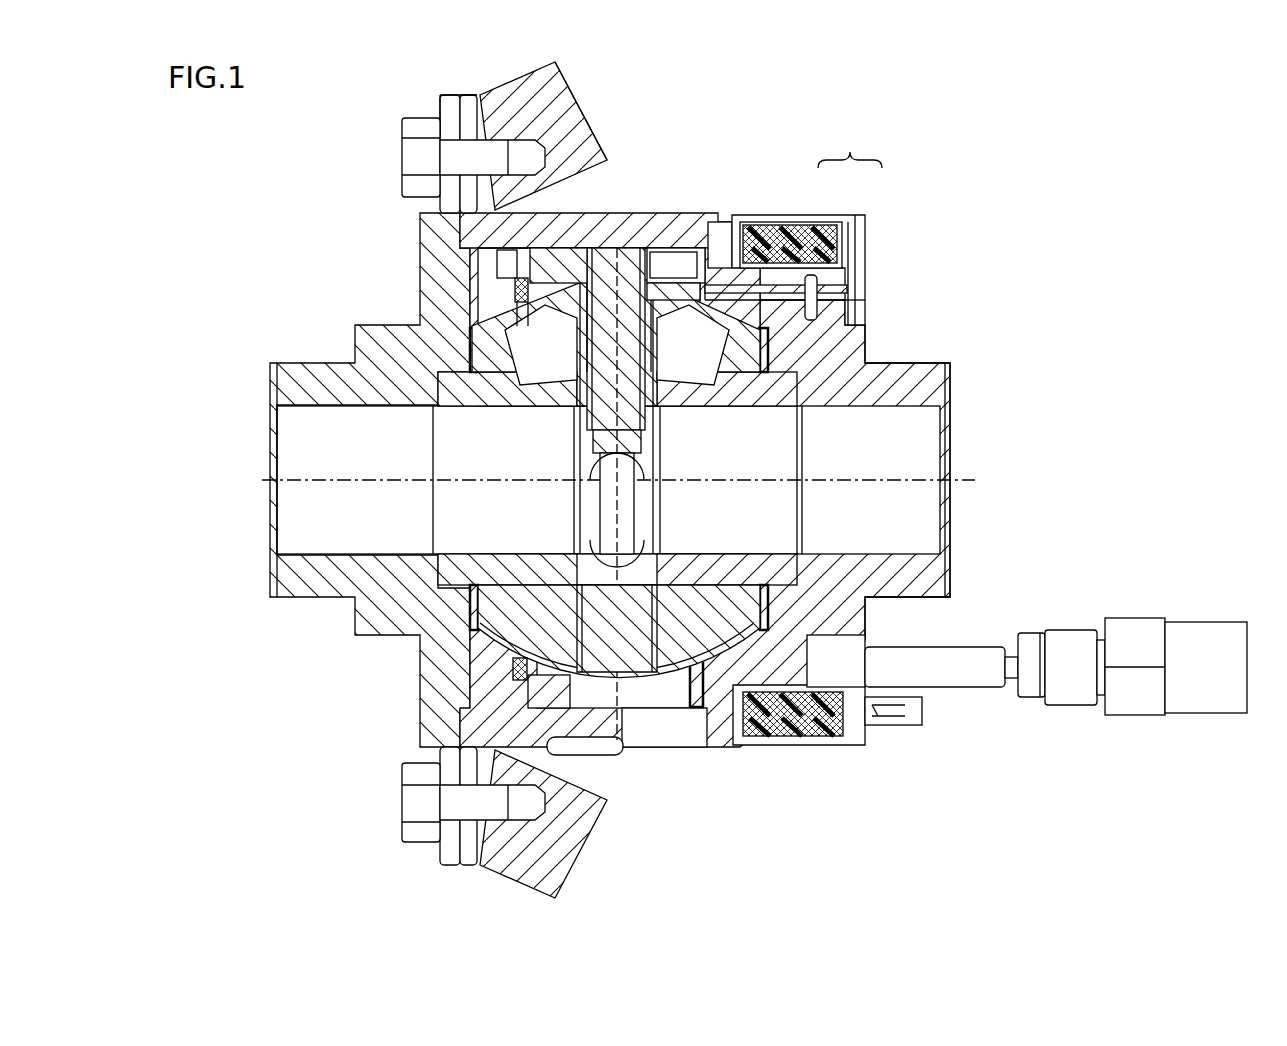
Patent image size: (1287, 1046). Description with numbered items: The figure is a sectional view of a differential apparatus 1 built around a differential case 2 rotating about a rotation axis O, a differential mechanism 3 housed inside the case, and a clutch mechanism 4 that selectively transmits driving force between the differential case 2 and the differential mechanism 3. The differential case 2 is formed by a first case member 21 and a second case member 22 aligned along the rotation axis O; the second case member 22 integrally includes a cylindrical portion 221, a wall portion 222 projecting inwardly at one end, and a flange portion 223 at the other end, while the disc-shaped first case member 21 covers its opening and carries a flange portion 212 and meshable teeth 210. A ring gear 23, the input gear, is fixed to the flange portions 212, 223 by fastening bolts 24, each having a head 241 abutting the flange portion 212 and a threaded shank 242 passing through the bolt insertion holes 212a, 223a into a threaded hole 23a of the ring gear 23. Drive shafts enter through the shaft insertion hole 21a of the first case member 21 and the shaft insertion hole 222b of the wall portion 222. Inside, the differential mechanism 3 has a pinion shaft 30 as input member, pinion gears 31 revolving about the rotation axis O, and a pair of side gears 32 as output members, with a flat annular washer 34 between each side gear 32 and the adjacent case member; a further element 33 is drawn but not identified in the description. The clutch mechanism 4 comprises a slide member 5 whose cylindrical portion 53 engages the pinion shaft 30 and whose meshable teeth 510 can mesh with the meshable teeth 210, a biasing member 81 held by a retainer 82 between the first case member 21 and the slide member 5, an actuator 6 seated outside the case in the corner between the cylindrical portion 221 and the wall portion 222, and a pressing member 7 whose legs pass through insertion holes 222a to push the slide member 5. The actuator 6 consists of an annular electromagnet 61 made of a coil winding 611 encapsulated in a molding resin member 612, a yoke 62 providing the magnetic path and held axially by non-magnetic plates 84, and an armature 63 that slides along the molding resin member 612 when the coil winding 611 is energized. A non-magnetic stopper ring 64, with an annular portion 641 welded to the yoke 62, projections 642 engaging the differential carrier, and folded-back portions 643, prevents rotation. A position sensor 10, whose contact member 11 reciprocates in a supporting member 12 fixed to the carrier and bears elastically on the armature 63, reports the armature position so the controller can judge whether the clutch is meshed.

The differential apparatus 1 is at (410, 100).
The differential case 2 is at (394, 690).
The differential mechanism 3 is at (678, 690).
The clutch mechanism 4 is at (888, 286).
The slide member 5 is at (690, 248).
The actuator 6 is at (876, 215).
The pressing member 7 is at (853, 297).
The position sensor 10 is at (1056, 656).
The contact member 11 is at (960, 688).
The supporting member 12 is at (1127, 716).
The first case member 21 is at (268, 350).
The shaft insertion hole 21a is at (300, 447).
The second case member 22 is at (970, 566).
The ring gear 23 is at (578, 118).
The threaded hole 23a is at (532, 130).
The fastening bolt 24 is at (402, 156).
The pinion shaft 30 is at (642, 310).
The pinion gear 31 is at (700, 262).
The side gear 32 is at (790, 566).
The trunnion portion 33 is at (602, 252).
The washer 34 is at (772, 602).
The cylindrical portion 53 is at (562, 214).
The electromagnet 61 is at (850, 151).
The yoke 62 is at (782, 230).
The armature 63 is at (858, 264).
The stopper ring 64 is at (858, 240).
The biasing member 81 is at (507, 285).
The retainer 82 is at (515, 297).
The plate 84 is at (825, 300).
The meshable teeth 210 is at (545, 697).
The flange portion 212 is at (449, 97).
The bolt insertion hole 212a is at (445, 133).
The cylindrical portion 221 is at (648, 226).
The wall portion 222 is at (836, 338).
The insertion hole 222a is at (721, 266).
The shaft insertion hole 222b is at (924, 443).
The flange portion 223 is at (467, 97).
The bolt insertion hole 223a is at (486, 102).
The head 241 is at (420, 164).
The shank 242 is at (500, 160).
The meshable teeth 510 is at (518, 700).
The coil winding 611 is at (815, 230).
The molding resin member 612 is at (846, 230).
The annular portion 641 is at (840, 742).
The projection 642 is at (905, 726).
The folded-back portion 643 is at (880, 726).
The rotation axis O is at (958, 480).